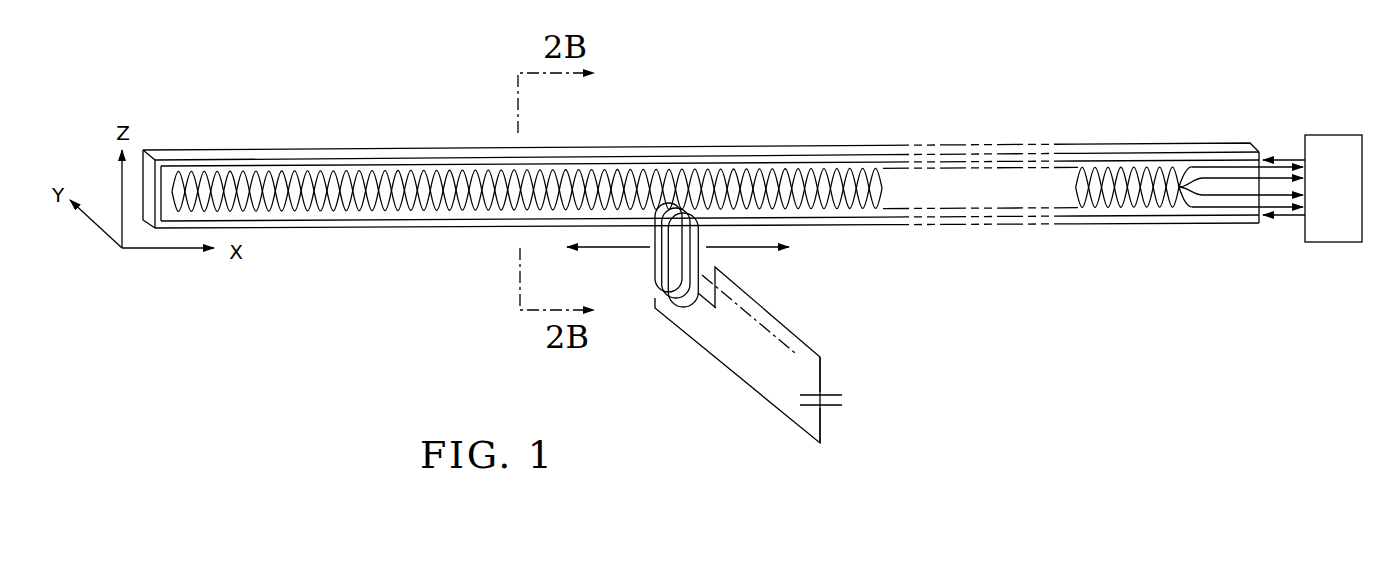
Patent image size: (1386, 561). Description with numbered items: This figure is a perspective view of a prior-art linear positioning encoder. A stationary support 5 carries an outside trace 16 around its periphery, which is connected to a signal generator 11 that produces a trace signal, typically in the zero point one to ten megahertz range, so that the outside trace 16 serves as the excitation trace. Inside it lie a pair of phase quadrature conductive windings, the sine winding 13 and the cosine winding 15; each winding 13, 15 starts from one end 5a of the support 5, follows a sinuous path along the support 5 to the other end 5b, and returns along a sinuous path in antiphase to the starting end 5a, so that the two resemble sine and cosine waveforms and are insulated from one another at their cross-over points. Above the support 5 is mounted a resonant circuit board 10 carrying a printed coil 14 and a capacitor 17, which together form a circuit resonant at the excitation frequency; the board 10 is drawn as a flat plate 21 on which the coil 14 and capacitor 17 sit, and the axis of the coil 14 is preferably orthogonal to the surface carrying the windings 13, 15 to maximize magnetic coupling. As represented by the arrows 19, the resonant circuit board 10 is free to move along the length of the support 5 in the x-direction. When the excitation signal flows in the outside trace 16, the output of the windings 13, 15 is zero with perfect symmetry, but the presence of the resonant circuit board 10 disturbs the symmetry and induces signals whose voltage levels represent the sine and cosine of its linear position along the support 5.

The support 5 is at (724, 143).
The end of support 5a is at (1177, 167).
The other end of support 5b is at (197, 157).
The resonant circuit board 10 is at (770, 341).
The signal generator 11 is at (1327, 148).
The sine winding 13 is at (378, 172).
The coil 14 is at (667, 275).
The cosine winding 15 is at (405, 172).
The outside trace 16 is at (283, 160).
The capacitor 17 is at (830, 407).
The arrows 19 is at (613, 248).
The conductor plate 21 is at (777, 342).